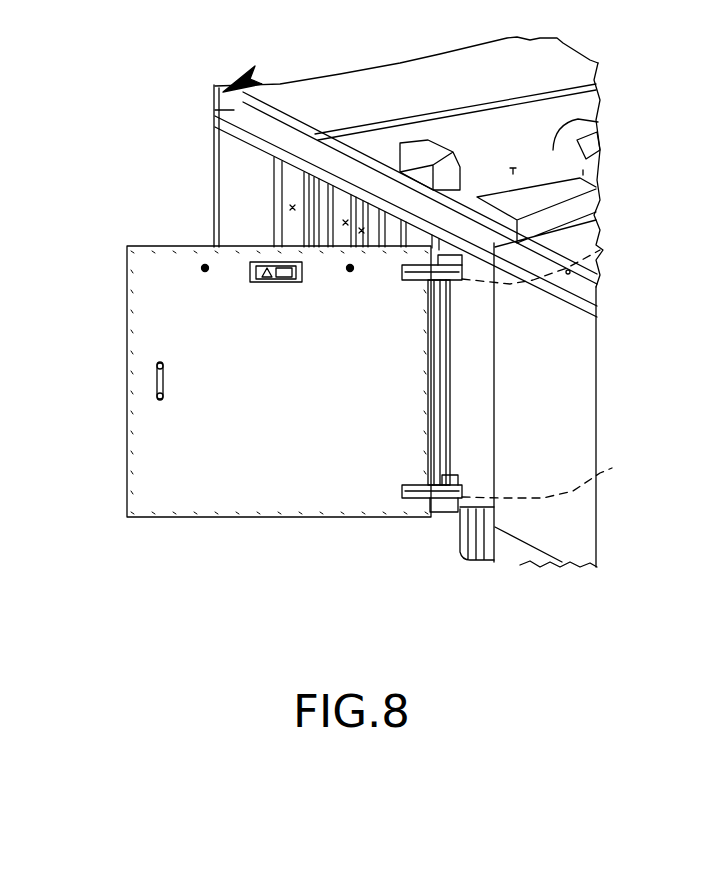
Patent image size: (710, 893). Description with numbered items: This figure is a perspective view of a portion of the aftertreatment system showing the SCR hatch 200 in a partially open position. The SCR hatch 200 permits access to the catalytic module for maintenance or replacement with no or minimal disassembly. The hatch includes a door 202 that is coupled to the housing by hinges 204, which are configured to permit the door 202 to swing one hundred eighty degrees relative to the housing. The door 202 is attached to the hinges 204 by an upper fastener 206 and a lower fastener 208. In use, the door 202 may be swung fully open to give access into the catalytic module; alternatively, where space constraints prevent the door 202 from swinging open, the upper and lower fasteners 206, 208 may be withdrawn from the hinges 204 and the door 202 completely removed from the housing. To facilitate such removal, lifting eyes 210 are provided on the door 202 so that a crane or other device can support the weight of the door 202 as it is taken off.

The SCR hatch 200 is at (309, 556).
The door 202 is at (187, 483).
The hinges 204 is at (450, 290).
The upper fastener 206 is at (607, 250).
The lower fastener 208 is at (612, 468).
The lifting eyes 210 is at (350, 262).